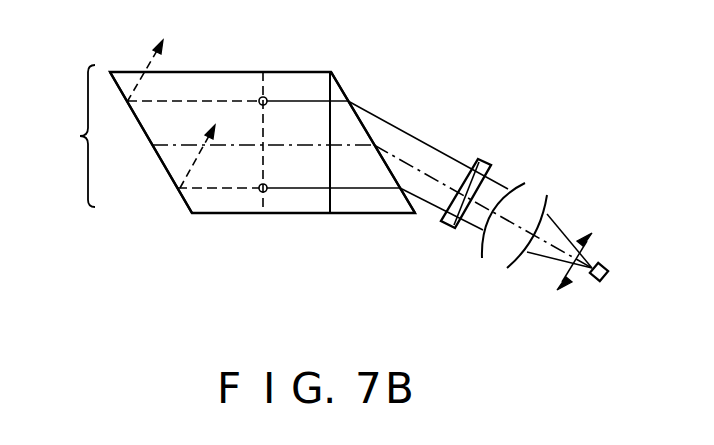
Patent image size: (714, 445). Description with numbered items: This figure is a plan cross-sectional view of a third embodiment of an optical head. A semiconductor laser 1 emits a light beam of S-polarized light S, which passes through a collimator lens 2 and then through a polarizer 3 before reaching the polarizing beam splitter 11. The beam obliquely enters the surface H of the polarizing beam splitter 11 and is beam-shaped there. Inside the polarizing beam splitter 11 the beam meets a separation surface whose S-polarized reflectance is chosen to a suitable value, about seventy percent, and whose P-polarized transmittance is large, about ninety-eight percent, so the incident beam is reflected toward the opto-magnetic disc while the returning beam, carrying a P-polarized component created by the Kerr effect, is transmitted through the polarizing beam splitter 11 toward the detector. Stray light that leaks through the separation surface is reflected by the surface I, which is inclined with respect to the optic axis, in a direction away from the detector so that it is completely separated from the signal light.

The polarizing beam splitter 11 is at (228, 126).
The surface I is at (192, 205).
The surface H is at (343, 88).
The polarizer 3 is at (491, 158).
The collimator lens 2 is at (527, 207).
The semiconductor laser 1 is at (607, 263).
The S-polarized light S is at (565, 278).